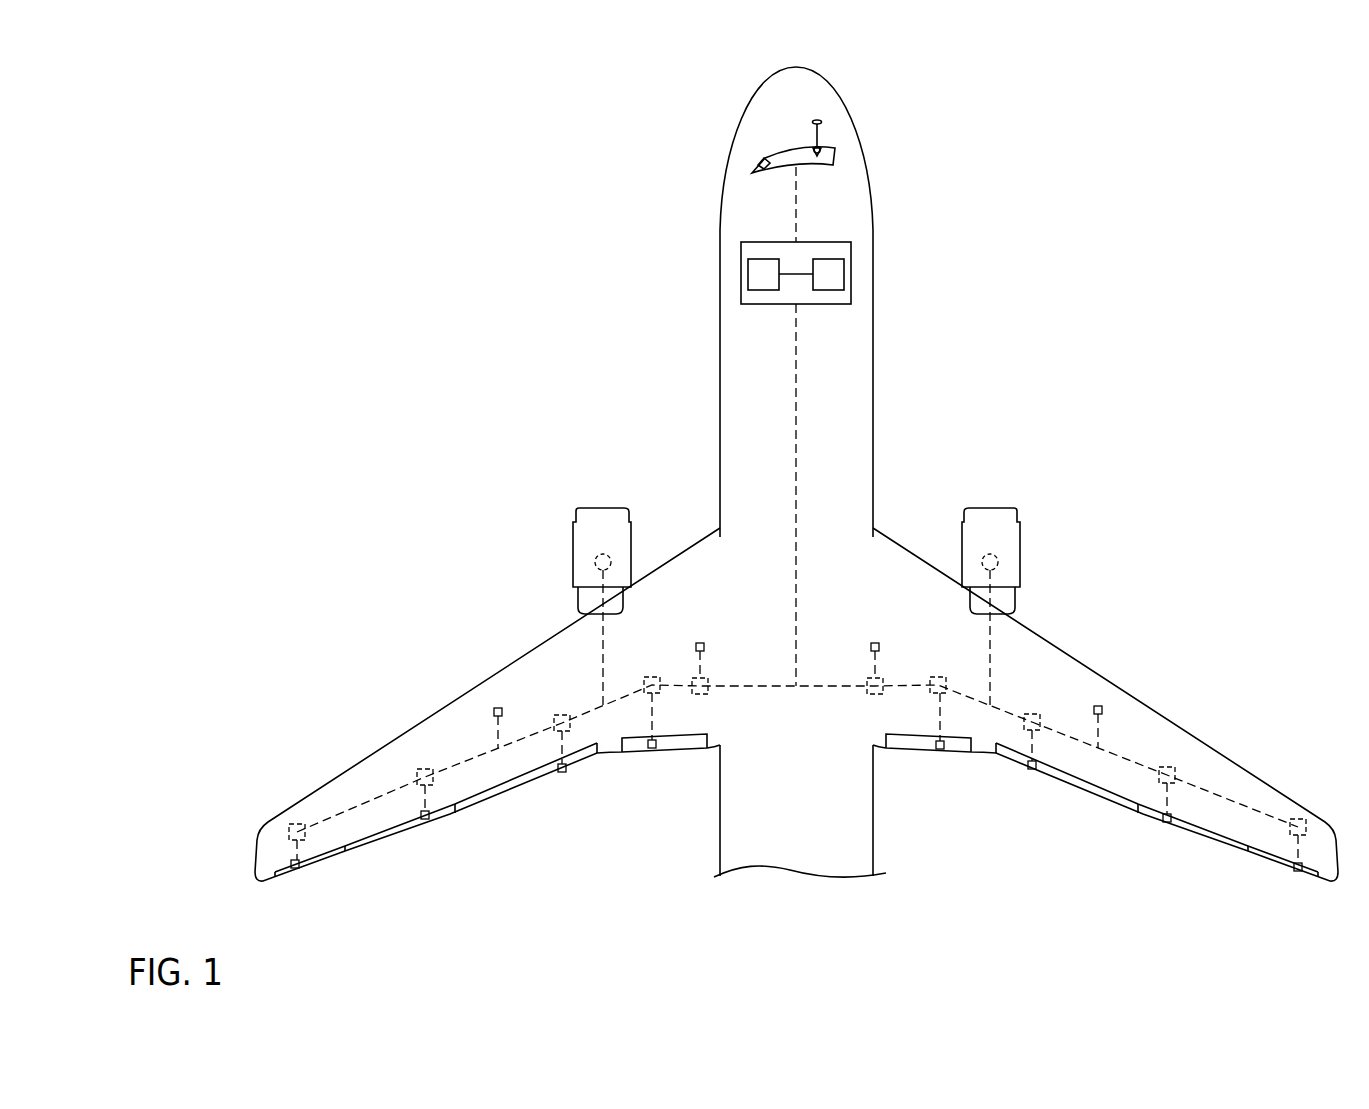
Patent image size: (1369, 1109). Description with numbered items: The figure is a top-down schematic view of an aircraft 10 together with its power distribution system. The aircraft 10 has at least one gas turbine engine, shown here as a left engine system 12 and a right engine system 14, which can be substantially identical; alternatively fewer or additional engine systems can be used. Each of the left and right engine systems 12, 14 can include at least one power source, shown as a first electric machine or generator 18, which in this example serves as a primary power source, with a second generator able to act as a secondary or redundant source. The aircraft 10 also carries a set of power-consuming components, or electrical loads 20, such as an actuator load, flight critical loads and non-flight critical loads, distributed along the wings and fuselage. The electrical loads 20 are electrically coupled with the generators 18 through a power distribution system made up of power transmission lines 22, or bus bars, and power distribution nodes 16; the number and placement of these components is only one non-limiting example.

The aircraft 10 is at (613, 232).
The left engine system 12 is at (601, 518).
The right engine system 14 is at (1003, 518).
The power distribution node 16 is at (305, 834).
The generator 18 is at (612, 560).
The electrical load 20 is at (748, 275).
The power transmission line 22 is at (797, 398).